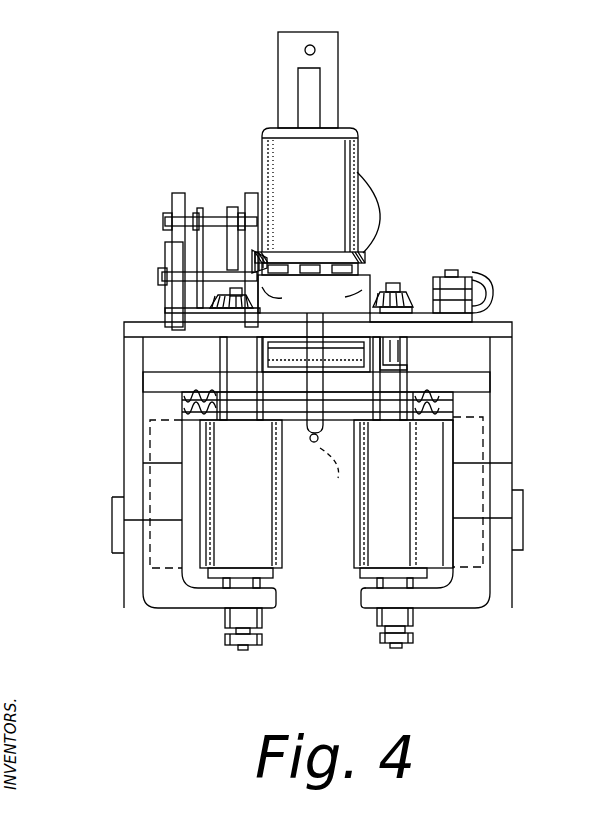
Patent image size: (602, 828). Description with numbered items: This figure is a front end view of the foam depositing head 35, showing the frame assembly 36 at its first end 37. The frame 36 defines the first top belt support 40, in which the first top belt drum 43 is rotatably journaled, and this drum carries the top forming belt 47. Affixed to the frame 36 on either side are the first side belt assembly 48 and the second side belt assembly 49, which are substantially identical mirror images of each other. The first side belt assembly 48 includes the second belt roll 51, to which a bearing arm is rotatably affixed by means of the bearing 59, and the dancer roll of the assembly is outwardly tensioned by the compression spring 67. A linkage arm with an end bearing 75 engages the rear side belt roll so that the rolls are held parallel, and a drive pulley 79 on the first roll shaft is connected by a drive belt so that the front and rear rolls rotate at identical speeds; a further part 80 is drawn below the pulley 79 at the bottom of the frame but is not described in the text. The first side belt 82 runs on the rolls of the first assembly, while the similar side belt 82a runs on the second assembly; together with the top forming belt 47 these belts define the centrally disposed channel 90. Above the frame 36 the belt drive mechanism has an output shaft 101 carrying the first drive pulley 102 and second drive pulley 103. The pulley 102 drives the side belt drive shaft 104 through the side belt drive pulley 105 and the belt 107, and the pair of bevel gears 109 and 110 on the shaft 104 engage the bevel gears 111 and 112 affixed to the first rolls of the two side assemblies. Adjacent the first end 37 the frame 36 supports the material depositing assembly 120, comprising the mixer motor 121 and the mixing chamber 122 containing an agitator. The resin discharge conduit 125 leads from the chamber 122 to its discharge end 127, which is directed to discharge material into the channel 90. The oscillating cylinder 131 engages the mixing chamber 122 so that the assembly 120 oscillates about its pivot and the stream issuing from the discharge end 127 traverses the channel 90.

The foam depositing head 35 is at (108, 253).
The frame assembly 36 is at (131, 327).
The first end 37 is at (477, 328).
The first top belt support 40 is at (392, 355).
The first top belt drum 43 is at (234, 365).
The top forming belt 47 is at (268, 350).
The first side belt assembly 48 is at (152, 437).
The second side belt assembly 49 is at (470, 440).
The second belt roll 51 is at (270, 580).
The bearing 59 is at (263, 618).
The compression spring 67 is at (192, 400).
The end bearing 75 is at (225, 618).
The drive pulley 79 is at (226, 648).
The washer 80 is at (225, 638).
The first side belt 82 is at (250, 511).
The side belt 82a is at (375, 537).
The channel 90 is at (330, 550).
The output shaft 101 is at (210, 216).
The first drive pulley 102 is at (194, 206).
The second drive pulley 103 is at (230, 216).
The side belt drive shaft 104 is at (163, 278).
The side belt drive pulley 105 is at (198, 280).
The belt 107 is at (198, 258).
The bevel gear 109 is at (314, 294).
The bevel gear 110 is at (370, 262).
The bevel gear 111 is at (217, 305).
The bevel gear 112 is at (410, 292).
The material depositing assembly 120 is at (252, 147).
The mixer motor 121 is at (350, 158).
The mixing chamber 122 is at (378, 278).
The resin discharge conduit 125 is at (310, 440).
The discharge end 127 is at (315, 473).
The oscillating cylinder 131 is at (490, 285).